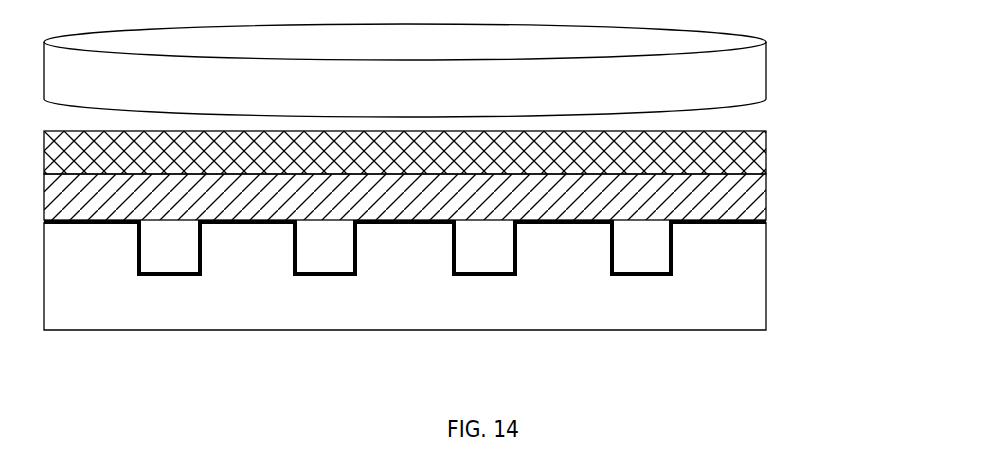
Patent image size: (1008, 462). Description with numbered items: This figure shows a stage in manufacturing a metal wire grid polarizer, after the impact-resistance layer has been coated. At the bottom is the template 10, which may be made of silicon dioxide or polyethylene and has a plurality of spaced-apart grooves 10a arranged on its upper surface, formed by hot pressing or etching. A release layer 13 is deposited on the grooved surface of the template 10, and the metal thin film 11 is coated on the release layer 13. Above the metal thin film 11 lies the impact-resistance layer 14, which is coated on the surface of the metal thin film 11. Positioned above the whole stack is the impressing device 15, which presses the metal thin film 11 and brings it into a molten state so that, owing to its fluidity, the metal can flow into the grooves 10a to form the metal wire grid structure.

The template 10 is at (767, 302).
The grooves 10a is at (474, 242).
The metal thin film 11 is at (767, 195).
The release layer 13 is at (642, 276).
The impact-resistance layer 14 is at (767, 150).
The impressing device 15 is at (767, 70).